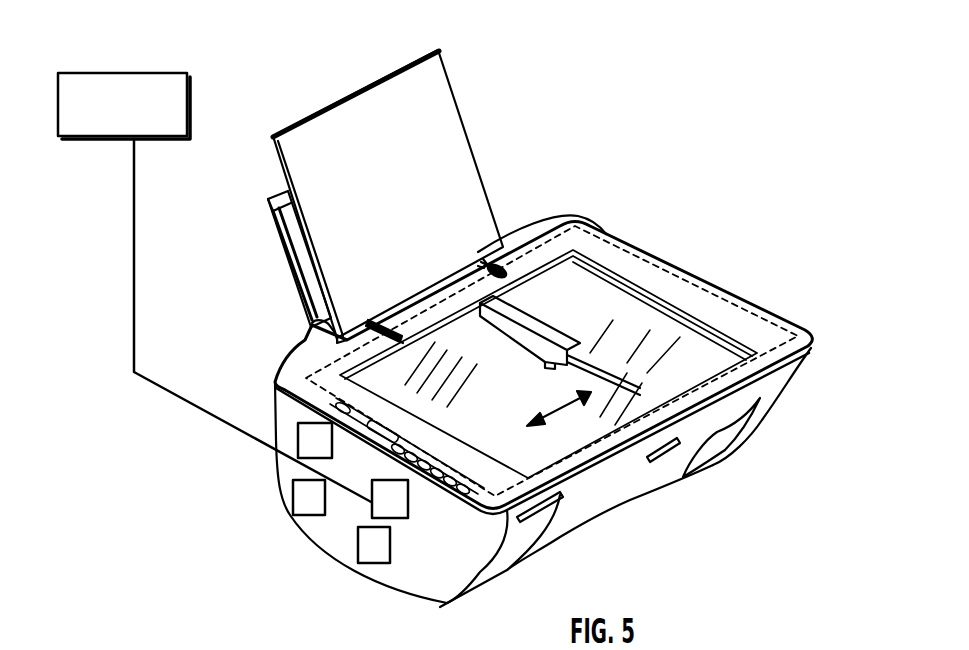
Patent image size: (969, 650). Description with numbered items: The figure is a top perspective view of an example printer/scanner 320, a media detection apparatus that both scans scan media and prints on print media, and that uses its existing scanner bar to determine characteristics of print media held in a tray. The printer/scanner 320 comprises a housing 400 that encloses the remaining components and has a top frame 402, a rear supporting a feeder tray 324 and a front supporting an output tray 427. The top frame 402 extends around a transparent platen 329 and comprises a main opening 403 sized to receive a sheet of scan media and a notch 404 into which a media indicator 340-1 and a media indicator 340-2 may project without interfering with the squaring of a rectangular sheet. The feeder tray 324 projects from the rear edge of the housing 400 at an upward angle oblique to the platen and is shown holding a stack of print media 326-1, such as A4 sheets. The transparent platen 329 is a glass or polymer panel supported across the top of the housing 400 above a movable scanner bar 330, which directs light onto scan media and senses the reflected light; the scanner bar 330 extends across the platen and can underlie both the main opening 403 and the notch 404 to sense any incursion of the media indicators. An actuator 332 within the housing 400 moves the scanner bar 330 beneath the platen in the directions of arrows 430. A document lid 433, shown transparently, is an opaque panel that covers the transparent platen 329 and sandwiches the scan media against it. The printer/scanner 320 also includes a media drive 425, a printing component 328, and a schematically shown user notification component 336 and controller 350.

The printer/scanner 320 is at (322, 48).
The feeder tray 324 is at (275, 236).
The stack of print media 326-1 is at (455, 85).
The printing component 328 is at (390, 545).
The transparent platen 329 is at (683, 330).
The movable scanner bar 330 is at (643, 380).
The actuator 332 is at (293, 498).
The user notification component 336 is at (124, 73).
The media indicator 340-1 is at (499, 266).
The media indicator 340-2 is at (375, 321).
The controller 350 is at (408, 500).
The housing 400 is at (806, 371).
The top frame 402 is at (610, 255).
The main opening 403 is at (632, 296).
The notch 404 is at (440, 320).
The media drive 425 is at (298, 433).
The output tray 427 is at (633, 488).
The arrows 430 is at (558, 415).
The document lid 433 is at (750, 315).